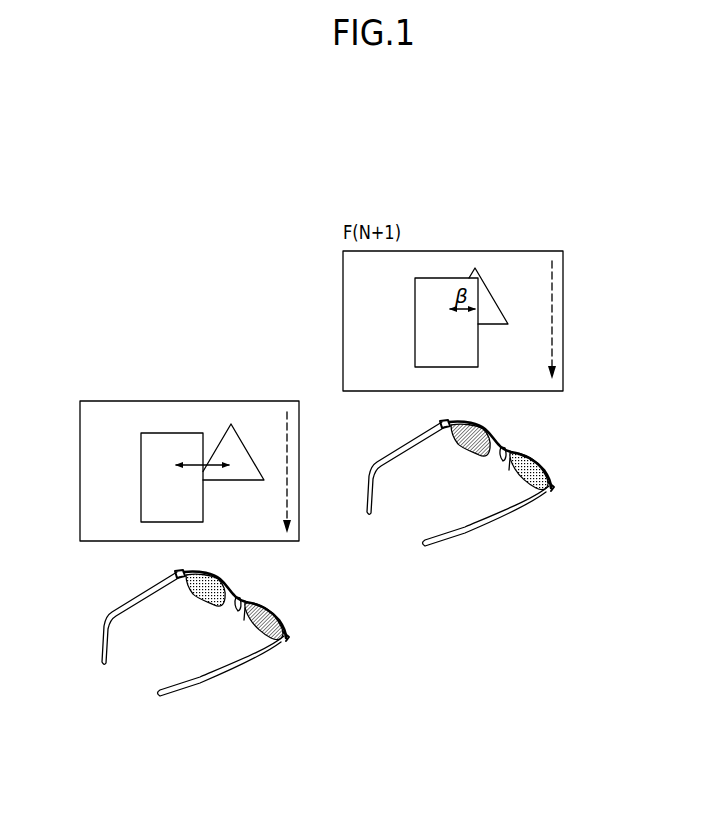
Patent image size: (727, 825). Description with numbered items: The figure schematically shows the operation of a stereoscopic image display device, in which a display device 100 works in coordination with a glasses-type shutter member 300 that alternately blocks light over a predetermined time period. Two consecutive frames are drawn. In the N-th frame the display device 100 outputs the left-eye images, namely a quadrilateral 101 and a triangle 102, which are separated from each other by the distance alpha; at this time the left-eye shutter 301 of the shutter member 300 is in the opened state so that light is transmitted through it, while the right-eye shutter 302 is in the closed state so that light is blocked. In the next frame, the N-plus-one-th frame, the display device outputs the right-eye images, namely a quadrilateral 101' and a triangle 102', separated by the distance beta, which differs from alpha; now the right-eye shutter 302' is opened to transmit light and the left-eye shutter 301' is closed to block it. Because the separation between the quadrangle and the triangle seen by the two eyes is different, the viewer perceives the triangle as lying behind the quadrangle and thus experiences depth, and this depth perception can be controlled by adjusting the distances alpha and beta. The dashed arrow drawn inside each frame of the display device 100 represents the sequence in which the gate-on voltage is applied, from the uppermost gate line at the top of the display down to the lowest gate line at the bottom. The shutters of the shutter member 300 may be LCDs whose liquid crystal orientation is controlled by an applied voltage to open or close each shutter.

The display device 100 is at (92, 478).
The quadrilateral 101 is at (172, 437).
The triangle 102 is at (233, 411).
The quadrilateral 101' is at (446, 279).
The triangle 102' is at (500, 257).
The shutter member 300 is at (193, 682).
The left-eye shutter 301 is at (126, 588).
The right-eye shutter 302 is at (264, 677).
The left-eye shutter 301' is at (470, 509).
The right-eye shutter 302' is at (567, 491).